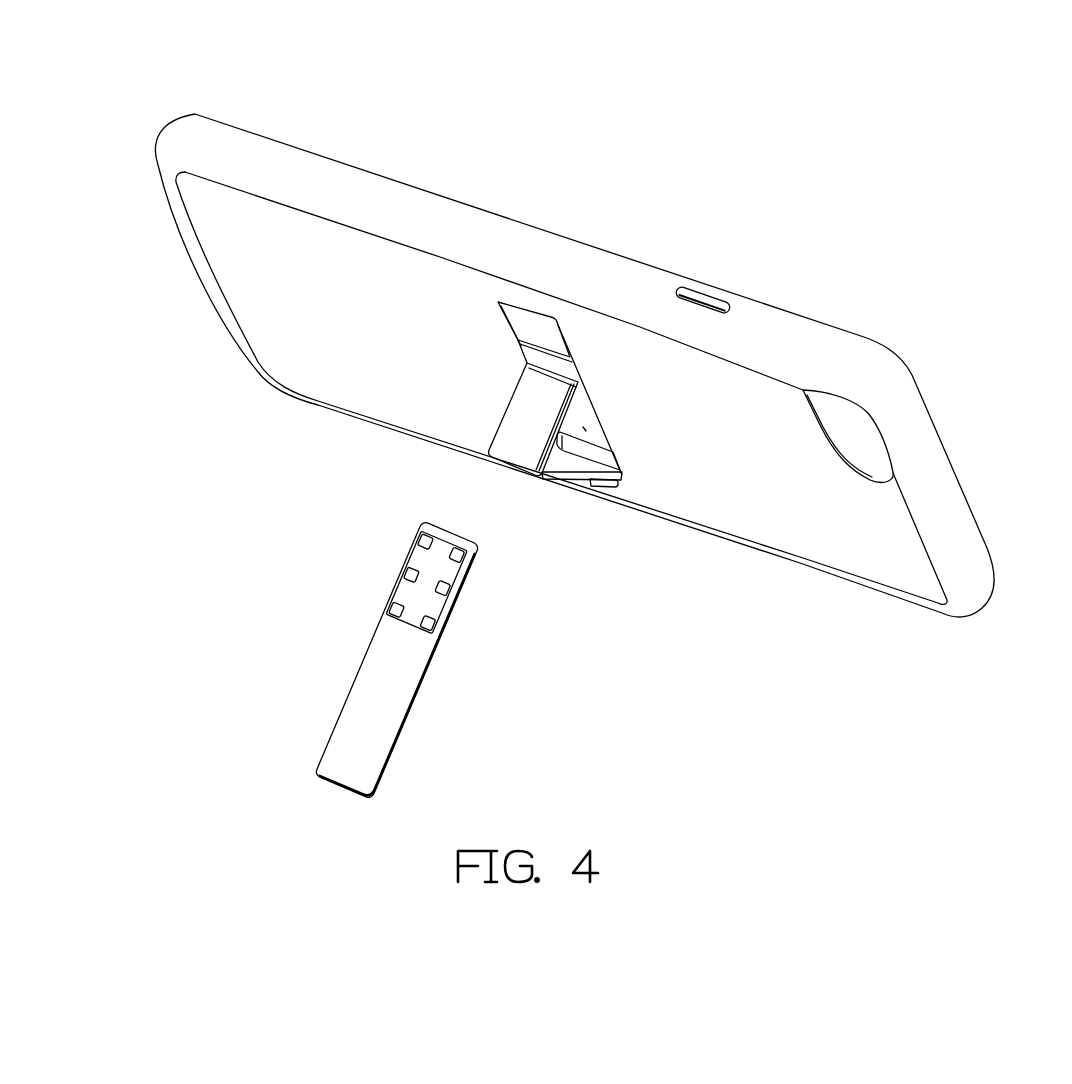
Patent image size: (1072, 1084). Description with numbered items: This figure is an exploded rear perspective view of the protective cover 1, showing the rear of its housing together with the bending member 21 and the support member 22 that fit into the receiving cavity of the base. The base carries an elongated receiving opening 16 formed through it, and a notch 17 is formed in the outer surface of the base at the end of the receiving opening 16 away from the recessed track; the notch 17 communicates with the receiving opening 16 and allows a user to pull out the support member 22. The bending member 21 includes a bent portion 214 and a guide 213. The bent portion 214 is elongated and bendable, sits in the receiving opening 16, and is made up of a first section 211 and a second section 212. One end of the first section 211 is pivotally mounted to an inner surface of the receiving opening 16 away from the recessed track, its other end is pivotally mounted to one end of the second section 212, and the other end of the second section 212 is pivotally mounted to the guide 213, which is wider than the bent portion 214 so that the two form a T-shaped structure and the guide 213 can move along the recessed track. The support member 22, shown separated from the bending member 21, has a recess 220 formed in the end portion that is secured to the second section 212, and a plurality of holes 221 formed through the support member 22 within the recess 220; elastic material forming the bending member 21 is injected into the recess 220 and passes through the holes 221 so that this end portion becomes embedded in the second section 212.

The protective cover 1 is at (657, 143).
The receiving opening 16 is at (583, 427).
The notch 17 is at (610, 482).
The bending member 21 is at (469, 369).
The first section 211 is at (563, 504).
The second section 212 is at (530, 393).
The guide 213 is at (533, 351).
The bent portion 214 is at (580, 412).
The support member 22 is at (379, 660).
The recess 220 is at (426, 582).
The holes 221 is at (427, 582).